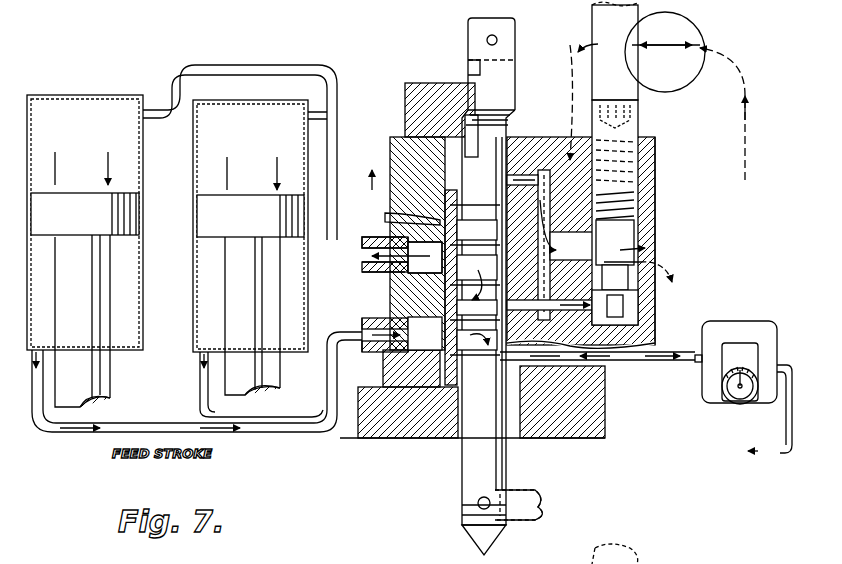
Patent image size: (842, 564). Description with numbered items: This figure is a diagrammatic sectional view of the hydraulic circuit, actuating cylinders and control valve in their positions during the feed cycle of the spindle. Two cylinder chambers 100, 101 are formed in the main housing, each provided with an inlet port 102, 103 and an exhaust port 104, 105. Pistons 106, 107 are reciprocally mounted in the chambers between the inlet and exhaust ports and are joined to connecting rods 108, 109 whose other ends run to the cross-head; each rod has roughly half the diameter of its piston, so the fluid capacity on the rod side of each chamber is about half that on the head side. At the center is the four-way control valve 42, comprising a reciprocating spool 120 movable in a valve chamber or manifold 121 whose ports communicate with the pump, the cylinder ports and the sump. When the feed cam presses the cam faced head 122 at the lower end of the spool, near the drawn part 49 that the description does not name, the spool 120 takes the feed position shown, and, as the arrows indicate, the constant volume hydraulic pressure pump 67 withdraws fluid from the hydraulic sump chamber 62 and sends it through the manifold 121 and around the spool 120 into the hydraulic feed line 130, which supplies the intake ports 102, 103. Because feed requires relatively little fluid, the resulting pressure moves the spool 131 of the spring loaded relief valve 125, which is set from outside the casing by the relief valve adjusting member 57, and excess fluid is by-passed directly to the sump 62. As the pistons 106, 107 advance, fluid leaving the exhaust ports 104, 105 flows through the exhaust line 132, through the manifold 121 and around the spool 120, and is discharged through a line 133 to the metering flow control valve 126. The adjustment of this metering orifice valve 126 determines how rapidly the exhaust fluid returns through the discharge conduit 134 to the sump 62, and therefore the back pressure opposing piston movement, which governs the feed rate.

The cylinder chamber 101 is at (80, 95).
The inlet port 103 is at (143, 115).
The piston 107 is at (90, 223).
The connecting rod 109 is at (92, 262).
The connecting rod 108 is at (240, 288).
The exhaust port 105 is at (40, 350).
The exhaust port 104 is at (203, 345).
The cylinder chamber 100 is at (225, 100).
The inlet port 102 is at (310, 114).
The piston 106 is at (268, 225).
The hydraulic feed line 130 is at (385, 217).
The exhaust line 132 is at (362, 328).
The valve chamber or manifold 121 is at (485, 245).
The reciprocating spool 120 is at (497, 461).
The relief valve 125 is at (650, 175).
The spool of relief valve 131 is at (625, 256).
The relief valve adjusting member 57 is at (592, 22).
The constant volume hydraulic pressure pump 67 is at (676, 70).
The hydraulic sump chamber 62 is at (557, 252).
The metering flow control valve 126 is at (733, 322).
The line 133 is at (694, 362).
The discharge conduit 134 is at (786, 425).
The four-way control valve 42 is at (452, 445).
The clevis link 49 is at (520, 500).
The cam faced head 122 is at (462, 527).